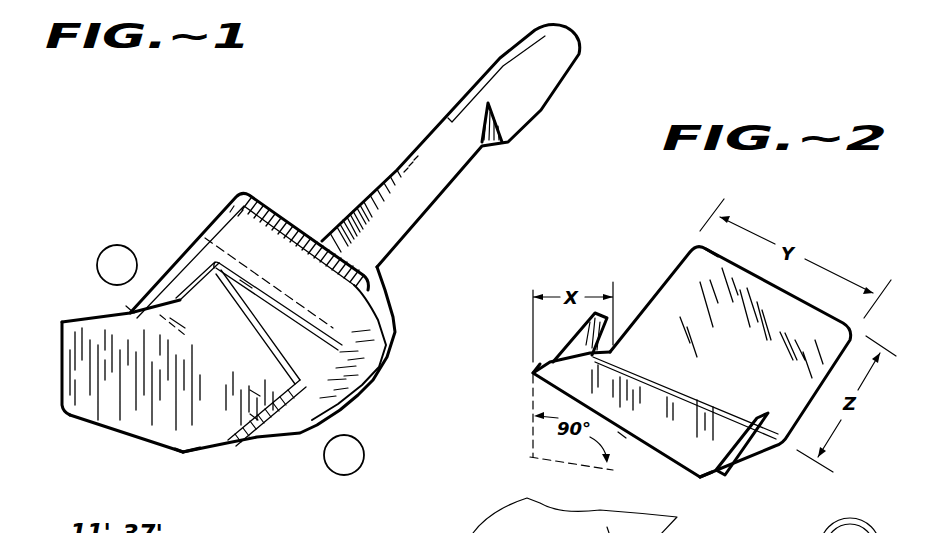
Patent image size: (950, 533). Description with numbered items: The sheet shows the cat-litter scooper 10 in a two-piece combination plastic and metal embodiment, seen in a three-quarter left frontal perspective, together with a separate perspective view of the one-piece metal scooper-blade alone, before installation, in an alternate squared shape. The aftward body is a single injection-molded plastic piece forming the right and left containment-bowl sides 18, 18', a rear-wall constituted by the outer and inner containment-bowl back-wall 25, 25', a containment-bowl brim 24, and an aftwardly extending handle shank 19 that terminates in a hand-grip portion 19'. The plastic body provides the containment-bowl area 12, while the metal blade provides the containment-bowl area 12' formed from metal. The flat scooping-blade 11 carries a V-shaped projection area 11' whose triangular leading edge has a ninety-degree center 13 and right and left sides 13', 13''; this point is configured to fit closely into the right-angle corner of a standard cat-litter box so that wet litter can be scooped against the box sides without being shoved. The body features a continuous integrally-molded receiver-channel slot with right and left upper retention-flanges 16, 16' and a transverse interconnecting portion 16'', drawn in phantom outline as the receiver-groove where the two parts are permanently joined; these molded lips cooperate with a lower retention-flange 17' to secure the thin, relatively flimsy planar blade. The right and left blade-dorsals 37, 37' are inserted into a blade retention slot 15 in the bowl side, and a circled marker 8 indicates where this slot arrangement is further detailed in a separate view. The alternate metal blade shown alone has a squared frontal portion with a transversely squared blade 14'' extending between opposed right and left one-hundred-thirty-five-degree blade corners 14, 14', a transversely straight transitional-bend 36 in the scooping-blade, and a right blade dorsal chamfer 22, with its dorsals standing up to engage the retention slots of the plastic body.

In FIG. 1, the cat-litter scooper 10 is at (166, 141).
In FIG. 1, the scooping-blade 11 is at (167, 365).
In FIG. 2, the scooping-blade 11 is at (623, 414).
In FIG. 1, the scooping-blade V-shaped projection area 11' is at (88, 376).
In FIG. 1, the containment-bowl area 12 is at (278, 306).
In FIG. 1, the containment-bowl area formed from metal 12' is at (216, 323).
In FIG. 2, the containment-bowl area formed from metal 12' is at (765, 363).
In FIG. 1, the leading edge of V-shaped projection, ninety-degree center 13 is at (124, 434).
In FIG. 2, the leading edge of V-shaped projection, ninety-degree center 13 is at (528, 453).
In FIG. 1, the leading edge of V-shaped projection, right side 13' is at (81, 325).
In FIG. 2, the leading edge of V-shaped projection, right side 13' is at (492, 416).
In FIG. 1, the leading edge of V-shaped projection, left side 13'' is at (204, 466).
In FIG. 2, the leading edge of V-shaped projection, left side 13'' is at (575, 502).
In FIG. 2, the one-hundred-thirty-five-degree blade corner, right 14 is at (505, 350).
In FIG. 2, the one-hundred-thirty-five-degree blade corner, left 14' is at (736, 492).
In FIG. 2, the transversely squared blade 14'' is at (653, 443).
In FIG. 1, the blade retention slot 15 is at (165, 236).
In FIG. 1, the blade upper retention-flange, right 16 is at (190, 338).
In FIG. 1, the blade upper retention-flange, left 16' is at (224, 400).
In FIG. 1, the transverse interconnecting portion 16'' is at (231, 293).
In FIG. 1, the blade lower retention-flange, left 17' is at (267, 441).
In FIG. 1, the containment-bowl side, right 18 is at (231, 240).
In FIG. 1, the containment-bowl side, left 18' is at (362, 354).
In FIG. 1, the handle shank 19 is at (451, 146).
In FIG. 1, the hand-grip portion 19' is at (531, 123).
In FIG. 2, the blade dorsal chamfer, right 22 is at (645, 278).
In FIG. 1, the containment-bowl brim 24 is at (393, 320).
In FIG. 1, the containment-bowl back-wall, outer 25 is at (357, 242).
In FIG. 1, the containment-bowl back-wall, inner 25' is at (269, 283).
In FIG. 1, the transitional-bend 36 is at (273, 373).
In FIG. 2, the transitional-bend 36 is at (683, 388).
In FIG. 1, the blade-dorsal, right 37 is at (145, 332).
In FIG. 2, the blade-dorsal, right 37 is at (547, 327).
In FIG. 1, the blade-dorsal, left 37' is at (221, 423).
In FIG. 2, the blade-dorsal, left 37' is at (760, 449).
In FIG. 1, the section line 8- 8 is at (300, 417).